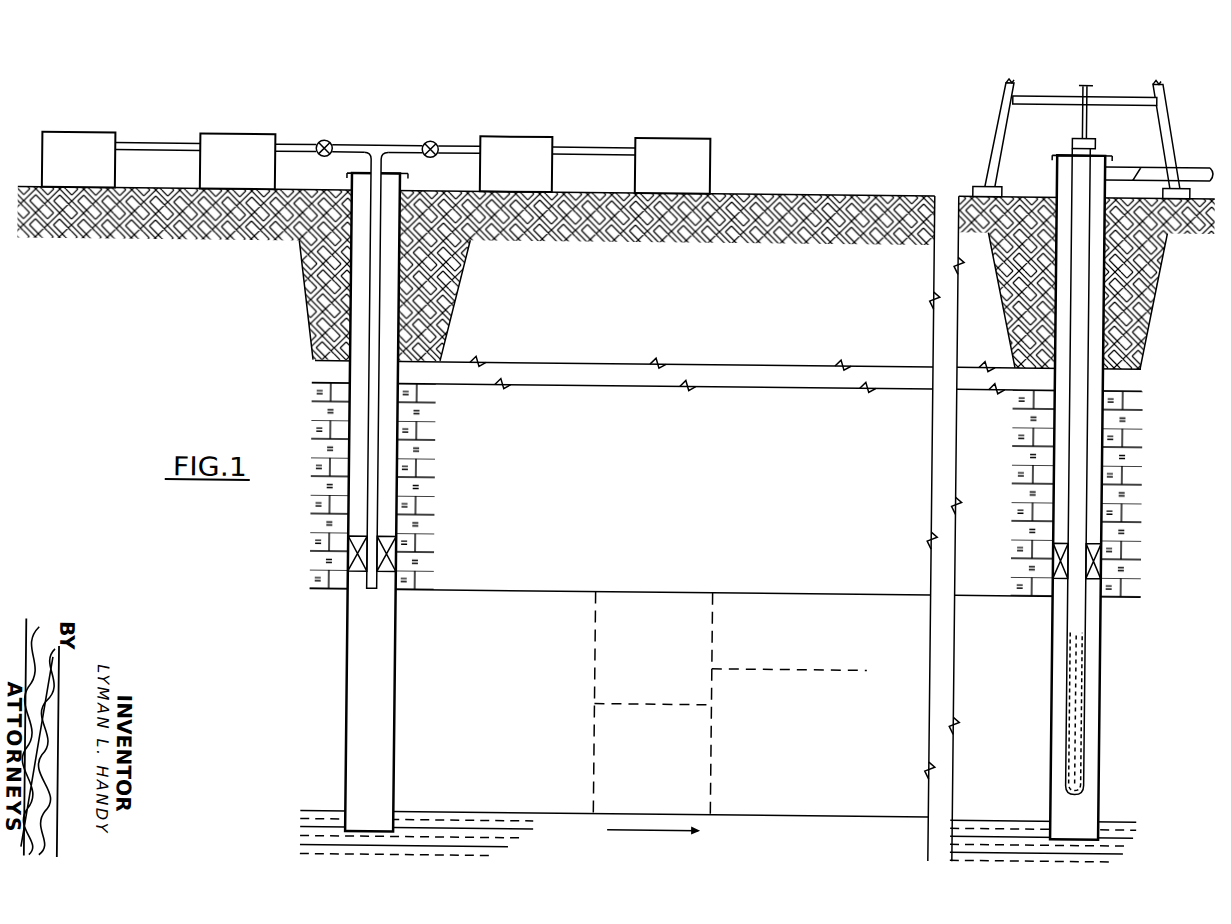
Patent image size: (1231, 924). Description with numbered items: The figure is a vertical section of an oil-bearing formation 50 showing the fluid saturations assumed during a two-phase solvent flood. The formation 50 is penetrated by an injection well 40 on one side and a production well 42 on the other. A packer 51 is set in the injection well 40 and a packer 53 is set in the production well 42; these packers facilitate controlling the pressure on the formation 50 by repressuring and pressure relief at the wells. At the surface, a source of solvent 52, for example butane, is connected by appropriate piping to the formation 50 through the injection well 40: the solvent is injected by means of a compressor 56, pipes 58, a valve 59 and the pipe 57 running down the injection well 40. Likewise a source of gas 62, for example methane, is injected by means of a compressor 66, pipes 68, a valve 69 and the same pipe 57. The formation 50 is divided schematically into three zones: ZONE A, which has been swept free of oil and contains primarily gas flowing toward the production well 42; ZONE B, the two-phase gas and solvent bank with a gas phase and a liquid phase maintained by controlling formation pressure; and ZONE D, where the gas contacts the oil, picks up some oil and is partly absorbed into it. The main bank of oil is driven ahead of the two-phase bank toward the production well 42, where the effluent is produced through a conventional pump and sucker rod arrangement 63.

The injection well 40 is at (399, 522).
The production well 42 is at (1056, 463).
The oil-bearing formation 50 is at (908, 582).
The packer 51 is at (361, 533).
The source of solvent 52 is at (88, 172).
The packer 53 is at (1064, 537).
The compressor 56 is at (247, 172).
The pipe 57 is at (368, 467).
The pipes 58 is at (325, 140).
The valve 59 is at (323, 157).
The source of gas 62 is at (682, 172).
The pump and sucker rod arrangement 63 is at (1081, 480).
The compressor 66 is at (526, 172).
The pipes 68 is at (441, 140).
The valve 69 is at (430, 157).